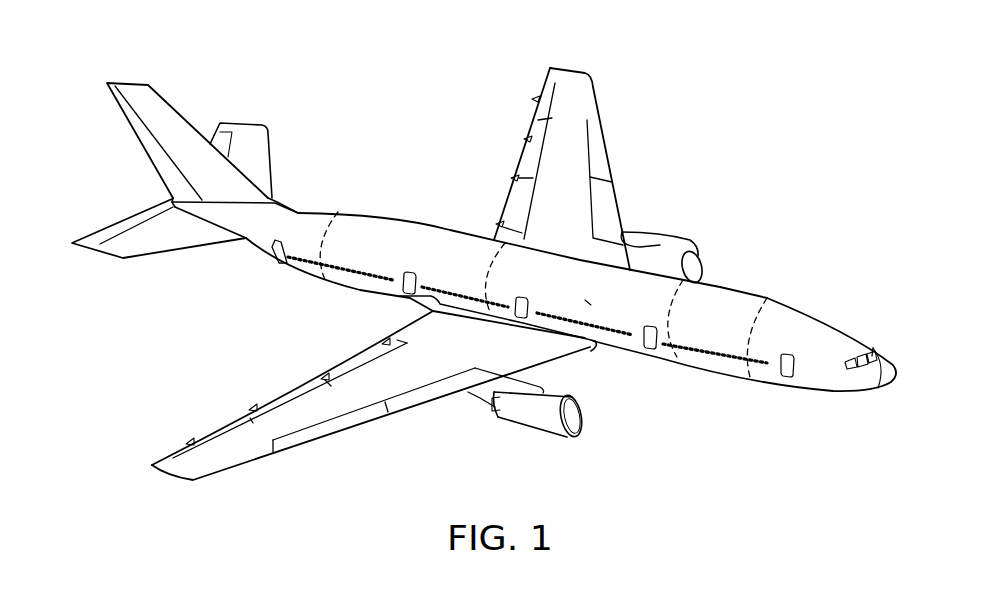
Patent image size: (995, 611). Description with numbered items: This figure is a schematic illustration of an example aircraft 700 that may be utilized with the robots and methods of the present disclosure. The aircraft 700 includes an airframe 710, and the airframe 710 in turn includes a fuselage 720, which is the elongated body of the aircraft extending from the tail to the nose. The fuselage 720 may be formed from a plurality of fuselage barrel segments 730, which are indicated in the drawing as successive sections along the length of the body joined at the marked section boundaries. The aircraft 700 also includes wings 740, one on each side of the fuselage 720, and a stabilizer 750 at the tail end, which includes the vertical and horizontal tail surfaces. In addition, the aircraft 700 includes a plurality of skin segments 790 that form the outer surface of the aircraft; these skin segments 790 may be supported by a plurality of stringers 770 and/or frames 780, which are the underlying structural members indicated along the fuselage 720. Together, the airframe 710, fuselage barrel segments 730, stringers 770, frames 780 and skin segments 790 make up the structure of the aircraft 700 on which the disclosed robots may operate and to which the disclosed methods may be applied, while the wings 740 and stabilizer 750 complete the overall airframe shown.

The aircraft 700 is at (791, 65).
The airframe 710 is at (800, 246).
The fuselage 720 is at (412, 215).
The fuselage barrel segments 730 is at (450, 245).
The wing 740 is at (563, 140).
The stabilizer 750 is at (250, 155).
The stringers 770 is at (678, 327).
The frames 780 is at (297, 243).
The skin segments 790 is at (588, 300).